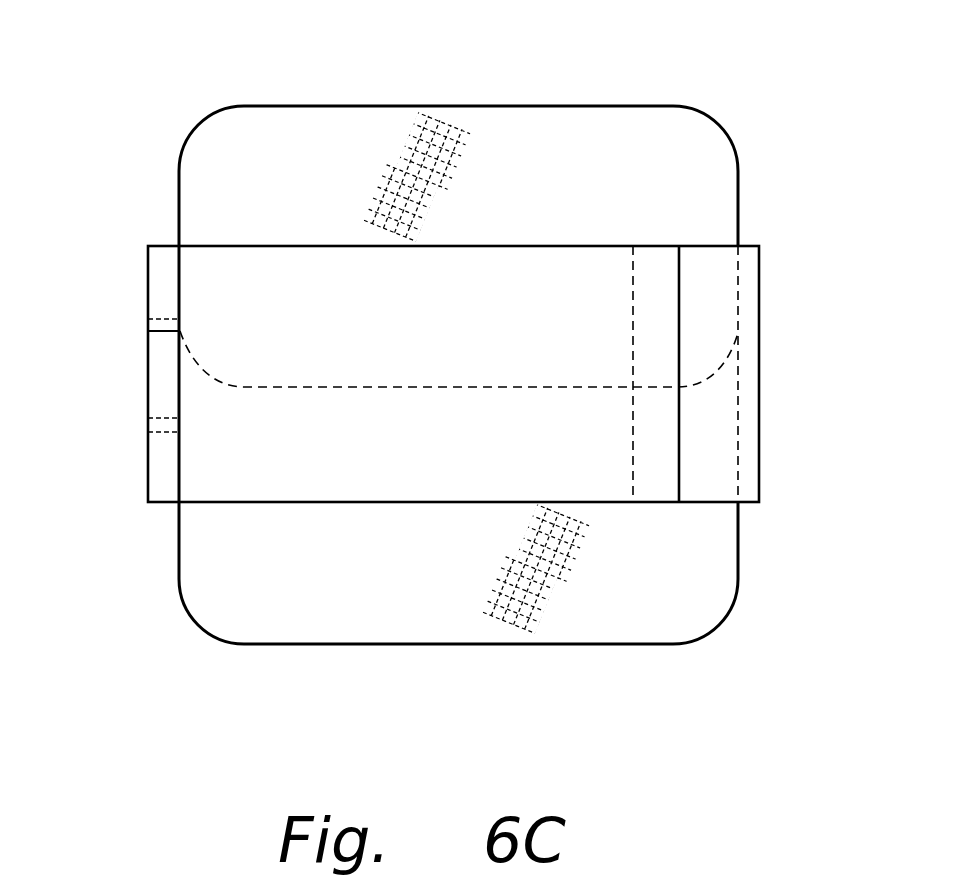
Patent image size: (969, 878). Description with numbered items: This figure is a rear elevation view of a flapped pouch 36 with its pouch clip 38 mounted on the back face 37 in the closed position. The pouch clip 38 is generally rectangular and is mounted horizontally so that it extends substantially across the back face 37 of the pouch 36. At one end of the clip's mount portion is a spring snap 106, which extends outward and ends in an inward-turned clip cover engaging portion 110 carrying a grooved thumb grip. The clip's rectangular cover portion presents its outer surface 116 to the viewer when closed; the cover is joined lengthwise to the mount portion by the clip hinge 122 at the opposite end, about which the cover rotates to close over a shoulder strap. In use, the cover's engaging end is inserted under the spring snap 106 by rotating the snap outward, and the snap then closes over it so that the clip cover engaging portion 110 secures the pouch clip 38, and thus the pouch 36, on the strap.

The flapped pouch 36 is at (683, 106).
The back face 37 is at (610, 177).
The pouch clip 38 is at (792, 281).
The spring snap 106 is at (759, 422).
The clip cover engaging portion 110 is at (712, 502).
The outer surface 116 is at (492, 330).
The clip hinge 122 is at (147, 398).